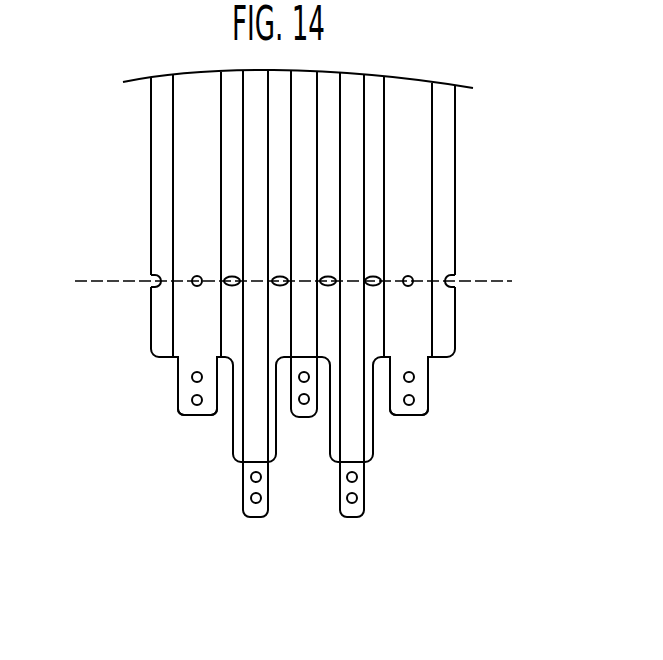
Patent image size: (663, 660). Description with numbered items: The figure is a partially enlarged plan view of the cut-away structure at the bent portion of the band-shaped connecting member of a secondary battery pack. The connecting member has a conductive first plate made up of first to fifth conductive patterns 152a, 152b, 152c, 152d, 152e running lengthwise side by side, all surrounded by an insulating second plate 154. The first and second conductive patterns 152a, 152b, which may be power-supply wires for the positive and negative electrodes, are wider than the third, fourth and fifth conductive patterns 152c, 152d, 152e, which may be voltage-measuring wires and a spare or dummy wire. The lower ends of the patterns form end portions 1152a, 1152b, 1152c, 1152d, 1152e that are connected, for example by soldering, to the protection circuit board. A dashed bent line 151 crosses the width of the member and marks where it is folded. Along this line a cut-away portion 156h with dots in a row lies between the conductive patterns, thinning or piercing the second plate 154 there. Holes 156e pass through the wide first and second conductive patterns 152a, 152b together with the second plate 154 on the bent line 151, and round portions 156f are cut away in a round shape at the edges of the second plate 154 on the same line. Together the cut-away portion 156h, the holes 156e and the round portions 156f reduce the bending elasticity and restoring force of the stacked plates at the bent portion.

The bent line 151 is at (88, 280).
The first conductive pattern 152a is at (190, 138).
The second conductive pattern 152b is at (415, 128).
The third conductive pattern 152c is at (253, 180).
The fourth conductive pattern 152d is at (350, 178).
The fifth conductive pattern 152e is at (297, 216).
The second plate 154 is at (450, 333).
The hole 156e is at (409, 286).
The round portion 156f is at (456, 279).
The cut-away portion 156h is at (375, 277).
The end portion of first conductive pattern 1152a is at (190, 399).
The end portion of second conductive pattern 1152b is at (418, 398).
The end portion of third conductive pattern 1152c is at (255, 508).
The end portion of fourth conductive pattern 1152d is at (353, 508).
The end portion of fifth conductive pattern 1152e is at (305, 410).